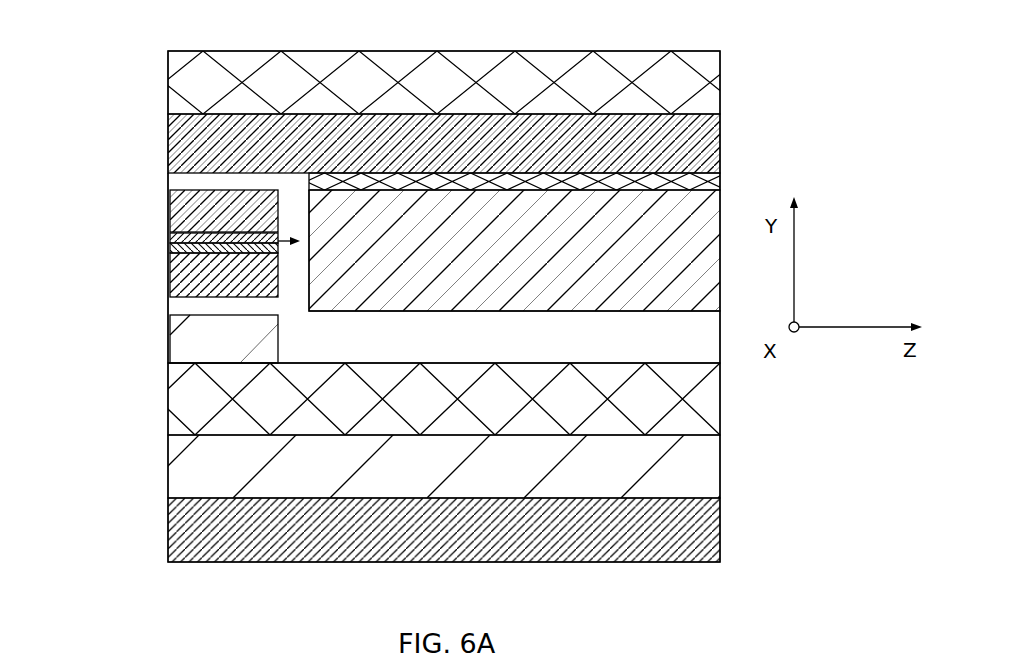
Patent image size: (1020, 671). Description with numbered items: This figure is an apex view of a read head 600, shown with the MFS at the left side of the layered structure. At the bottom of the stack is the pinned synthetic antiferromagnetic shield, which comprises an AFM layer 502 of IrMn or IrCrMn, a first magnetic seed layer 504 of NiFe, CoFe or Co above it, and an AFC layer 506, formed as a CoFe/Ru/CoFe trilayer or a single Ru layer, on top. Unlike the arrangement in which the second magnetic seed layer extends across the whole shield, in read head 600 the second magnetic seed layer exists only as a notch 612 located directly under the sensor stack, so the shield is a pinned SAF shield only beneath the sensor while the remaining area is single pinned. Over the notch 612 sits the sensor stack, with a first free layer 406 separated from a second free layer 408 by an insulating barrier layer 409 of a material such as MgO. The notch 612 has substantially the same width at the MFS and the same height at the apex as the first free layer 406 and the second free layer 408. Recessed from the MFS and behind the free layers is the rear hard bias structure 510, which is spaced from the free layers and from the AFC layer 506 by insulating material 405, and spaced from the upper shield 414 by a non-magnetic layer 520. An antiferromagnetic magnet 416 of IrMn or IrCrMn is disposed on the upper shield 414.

The read head 600 is at (113, 670).
The antiferromagnetic magnet 416 is at (461, 91).
The upper shield 414 is at (461, 161).
The non-magnetic layer 520 is at (726, 180).
The rear hard bias structure 510 is at (521, 265).
The insulating material 405 is at (522, 350).
The second free layer 408 is at (237, 225).
The barrier layer 409 is at (160, 247).
The first free layer 406 is at (237, 285).
The notch 612 is at (240, 352).
The AFC layer 506 is at (521, 415).
The first magnetic seed layer 504 is at (521, 480).
The AFM layer 502 is at (521, 543).
The media facing surface MFS is at (128, 279).